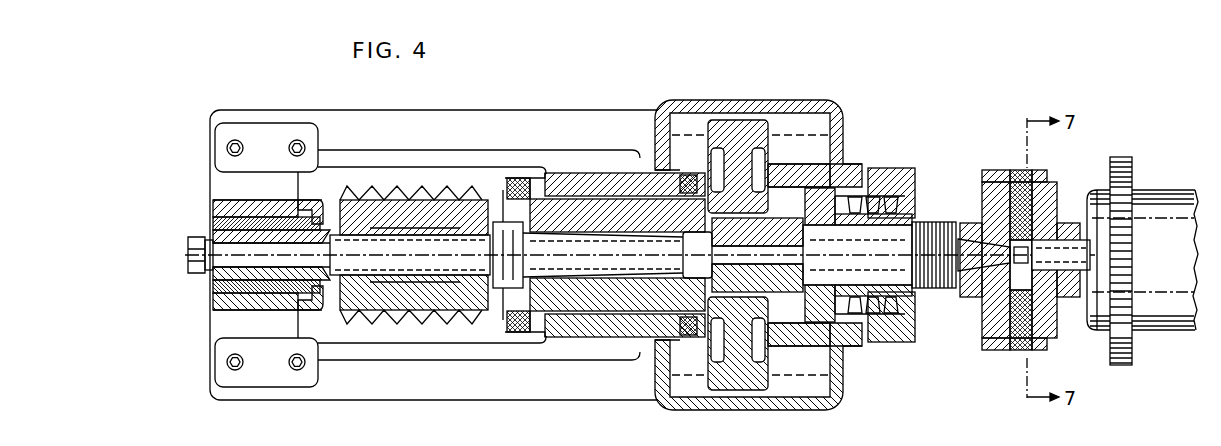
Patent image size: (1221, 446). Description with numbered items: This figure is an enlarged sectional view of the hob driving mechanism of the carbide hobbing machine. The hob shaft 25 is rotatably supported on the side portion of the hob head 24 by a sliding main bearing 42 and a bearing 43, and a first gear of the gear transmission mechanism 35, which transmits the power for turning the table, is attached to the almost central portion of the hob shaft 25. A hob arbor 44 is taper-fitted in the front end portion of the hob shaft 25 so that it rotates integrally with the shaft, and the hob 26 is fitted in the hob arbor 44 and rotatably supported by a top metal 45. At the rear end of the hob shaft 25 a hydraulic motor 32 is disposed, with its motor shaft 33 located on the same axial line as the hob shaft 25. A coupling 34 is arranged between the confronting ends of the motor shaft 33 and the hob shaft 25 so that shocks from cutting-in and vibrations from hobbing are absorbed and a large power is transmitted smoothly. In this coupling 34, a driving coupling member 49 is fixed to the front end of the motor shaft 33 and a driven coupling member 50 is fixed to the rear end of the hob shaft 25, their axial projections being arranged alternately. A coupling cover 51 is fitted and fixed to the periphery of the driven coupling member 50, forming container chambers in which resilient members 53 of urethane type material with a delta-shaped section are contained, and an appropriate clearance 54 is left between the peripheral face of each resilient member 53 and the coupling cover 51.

The hob head 24 is at (497, 113).
The hob shaft 25 is at (571, 305).
The hob 26 is at (397, 190).
The hydraulic motor 32 is at (1158, 322).
The motor shaft 33 is at (1062, 296).
The coupling 34 is at (985, 184).
The gear transmission mechanism 35 is at (735, 112).
The sliding main bearing 42 is at (622, 318).
The bearing 43 is at (892, 330).
The hob arbor 44 is at (418, 263).
The top metal 45 is at (255, 283).
The driving coupling member 49 is at (1061, 241).
The driven coupling member 50 is at (990, 343).
The coupling cover 51 is at (1036, 345).
The resilient member 53 is at (1020, 182).
The clearance 54 is at (1038, 180).